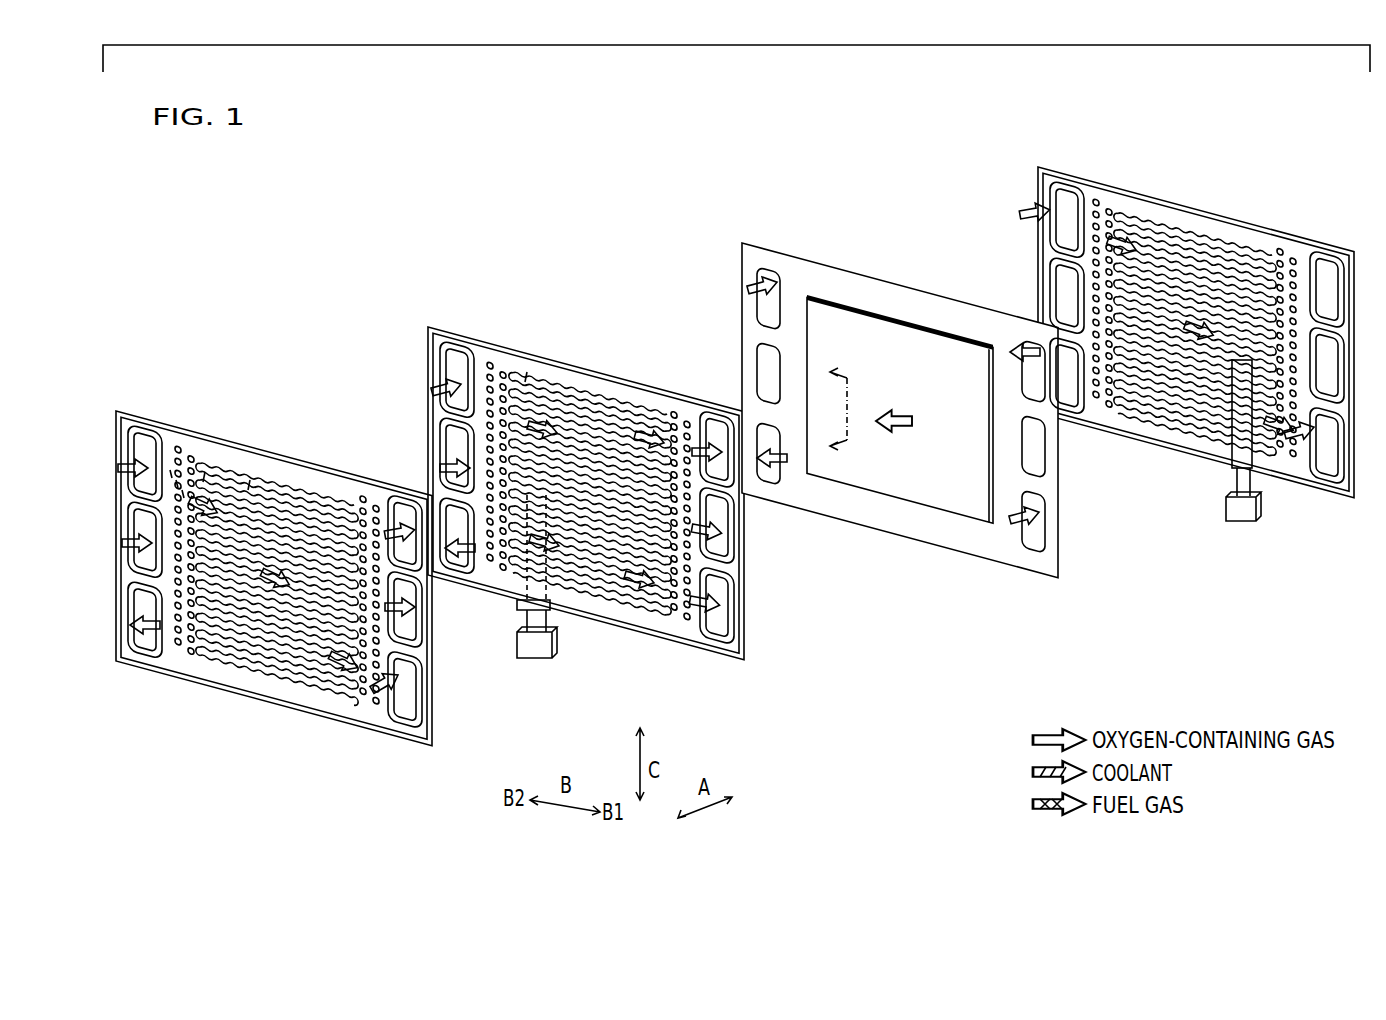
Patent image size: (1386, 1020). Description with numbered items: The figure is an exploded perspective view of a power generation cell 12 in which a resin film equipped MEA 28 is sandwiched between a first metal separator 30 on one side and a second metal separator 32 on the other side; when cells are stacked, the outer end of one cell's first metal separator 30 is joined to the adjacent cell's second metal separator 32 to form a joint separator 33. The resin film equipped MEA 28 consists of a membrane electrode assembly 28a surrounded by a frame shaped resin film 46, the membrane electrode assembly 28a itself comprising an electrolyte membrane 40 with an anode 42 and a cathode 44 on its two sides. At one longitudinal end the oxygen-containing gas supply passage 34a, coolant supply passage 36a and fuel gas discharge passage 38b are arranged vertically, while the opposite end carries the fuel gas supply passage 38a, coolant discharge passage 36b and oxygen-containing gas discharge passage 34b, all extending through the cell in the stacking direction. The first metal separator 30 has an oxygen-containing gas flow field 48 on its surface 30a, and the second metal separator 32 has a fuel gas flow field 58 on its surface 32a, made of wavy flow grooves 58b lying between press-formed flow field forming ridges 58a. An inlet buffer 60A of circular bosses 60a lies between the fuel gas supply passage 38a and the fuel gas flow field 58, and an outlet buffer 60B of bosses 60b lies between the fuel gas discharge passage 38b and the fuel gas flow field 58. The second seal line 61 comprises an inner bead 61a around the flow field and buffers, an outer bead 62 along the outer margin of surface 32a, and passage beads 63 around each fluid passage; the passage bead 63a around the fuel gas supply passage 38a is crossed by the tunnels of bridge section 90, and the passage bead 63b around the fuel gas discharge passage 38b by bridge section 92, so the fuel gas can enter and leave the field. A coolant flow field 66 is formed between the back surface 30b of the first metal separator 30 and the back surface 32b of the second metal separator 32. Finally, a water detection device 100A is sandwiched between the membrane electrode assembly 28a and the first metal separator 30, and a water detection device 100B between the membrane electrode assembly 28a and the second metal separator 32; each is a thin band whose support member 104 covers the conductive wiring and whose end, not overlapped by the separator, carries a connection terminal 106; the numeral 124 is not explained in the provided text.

The power generation cell 12 is at (322, 176).
The resin film equipped MEA 28 is at (900, 405).
The membrane electrode assembly 28a is at (920, 501).
The first metal separator 30 is at (427, 313).
The surface of first metal separator 30a is at (690, 630).
The surface of first metal separator 30b is at (662, 630).
The second metal separator 32 is at (124, 396).
The surface of second metal separator 32a is at (318, 702).
The surface of second metal separator 32b is at (322, 704).
The joint separator 33 is at (422, 278).
The oxygen-containing gas supply passage 34a is at (404, 517).
The oxygen-containing gas discharge passage 34b is at (157, 648).
The coolant supply passage 36a is at (427, 660).
The coolant discharge passage 36b is at (135, 658).
The fuel gas supply passage 38a is at (1035, 215).
The fuel gas discharge passage 38b is at (405, 708).
The electrolyte membrane 40 is at (893, 488).
The anode 42 is at (875, 313).
The cathode 44 is at (828, 313).
The resin film 46 is at (855, 290).
The oxygen-containing gas flow field 48 is at (560, 383).
The fuel gas flow field 58 is at (198, 403).
The flow field forming ridges 58a is at (205, 472).
The flow grooves 58b is at (250, 480).
The bosses 60a is at (195, 655).
The bosses 60b is at (353, 718).
The inlet buffer 60A is at (178, 662).
The outlet buffer 60B is at (368, 730).
The second seal line 61 is at (344, 719).
The inner bead 61a is at (260, 684).
The outer bead 62 is at (308, 702).
The passage beads 63 is at (204, 642).
The passage bead 63a is at (131, 455).
The passage bead 63b is at (435, 726).
The coolant flow field 66 is at (527, 372).
The bridge section 90 is at (172, 470).
The bridge section 92 is at (383, 708).
The water detection device 100A is at (559, 671).
The water detection device 100B is at (1233, 536).
The support member 104 is at (523, 522).
The connection terminal 106 is at (553, 657).
The drain opening 124 is at (553, 612).